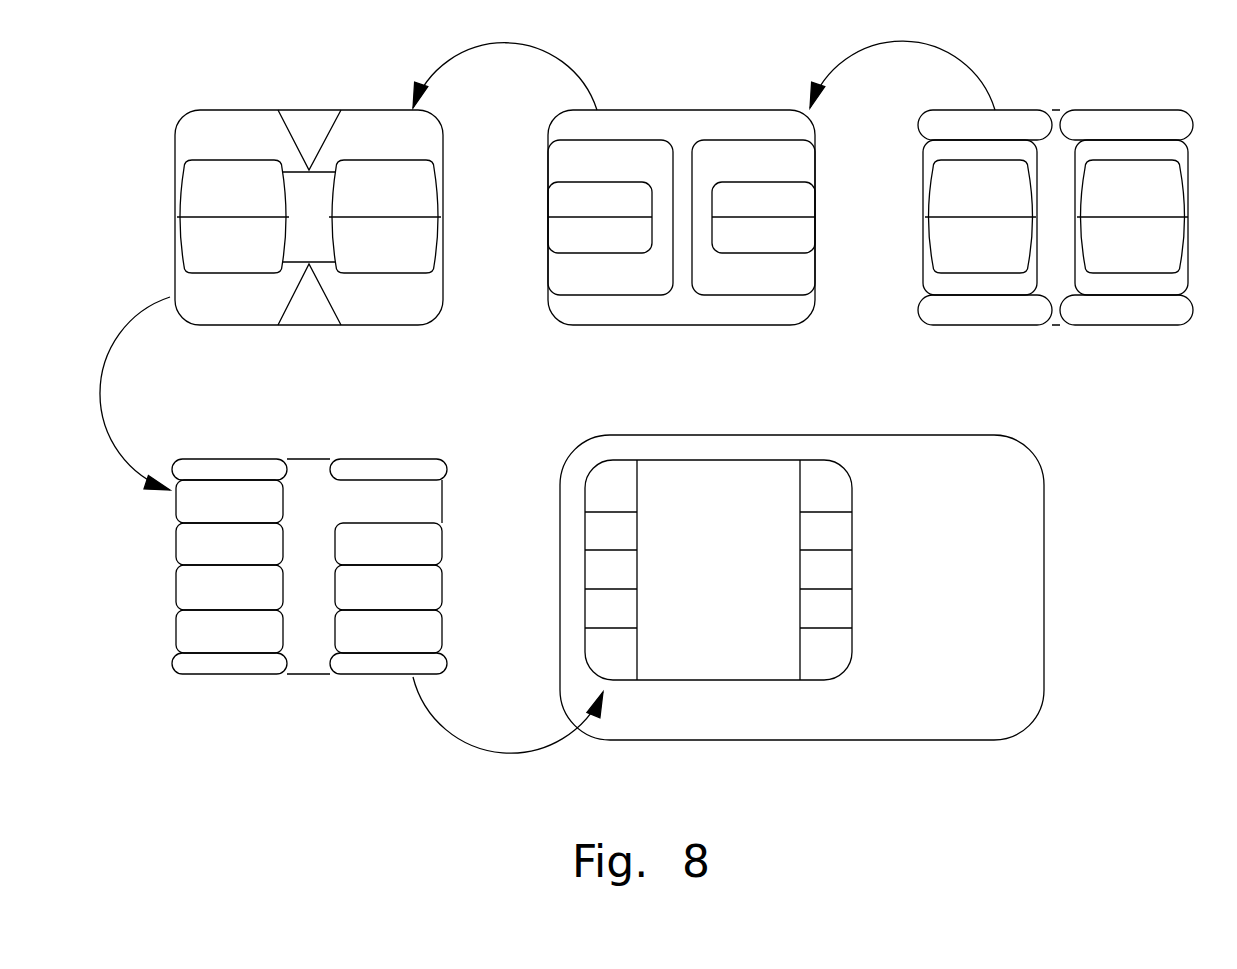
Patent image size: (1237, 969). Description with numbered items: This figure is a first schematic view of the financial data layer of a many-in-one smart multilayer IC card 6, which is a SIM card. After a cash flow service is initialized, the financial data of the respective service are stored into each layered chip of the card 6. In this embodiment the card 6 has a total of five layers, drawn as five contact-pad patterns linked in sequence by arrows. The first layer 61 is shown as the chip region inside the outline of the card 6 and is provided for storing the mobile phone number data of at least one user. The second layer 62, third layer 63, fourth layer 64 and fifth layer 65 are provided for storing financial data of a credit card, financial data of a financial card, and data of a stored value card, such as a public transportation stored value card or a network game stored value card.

The many-in-one smart multilayer IC card 6 is at (1044, 587).
The first layer 61 is at (852, 567).
The second layer 62 is at (310, 459).
The third layer 63 is at (222, 110).
The fourth layer 64 is at (682, 110).
The fifth layer 65 is at (1127, 110).